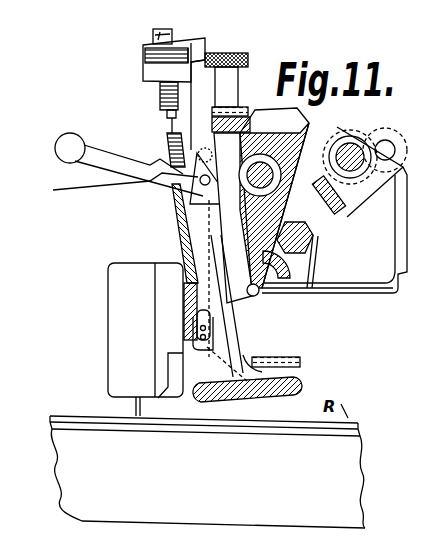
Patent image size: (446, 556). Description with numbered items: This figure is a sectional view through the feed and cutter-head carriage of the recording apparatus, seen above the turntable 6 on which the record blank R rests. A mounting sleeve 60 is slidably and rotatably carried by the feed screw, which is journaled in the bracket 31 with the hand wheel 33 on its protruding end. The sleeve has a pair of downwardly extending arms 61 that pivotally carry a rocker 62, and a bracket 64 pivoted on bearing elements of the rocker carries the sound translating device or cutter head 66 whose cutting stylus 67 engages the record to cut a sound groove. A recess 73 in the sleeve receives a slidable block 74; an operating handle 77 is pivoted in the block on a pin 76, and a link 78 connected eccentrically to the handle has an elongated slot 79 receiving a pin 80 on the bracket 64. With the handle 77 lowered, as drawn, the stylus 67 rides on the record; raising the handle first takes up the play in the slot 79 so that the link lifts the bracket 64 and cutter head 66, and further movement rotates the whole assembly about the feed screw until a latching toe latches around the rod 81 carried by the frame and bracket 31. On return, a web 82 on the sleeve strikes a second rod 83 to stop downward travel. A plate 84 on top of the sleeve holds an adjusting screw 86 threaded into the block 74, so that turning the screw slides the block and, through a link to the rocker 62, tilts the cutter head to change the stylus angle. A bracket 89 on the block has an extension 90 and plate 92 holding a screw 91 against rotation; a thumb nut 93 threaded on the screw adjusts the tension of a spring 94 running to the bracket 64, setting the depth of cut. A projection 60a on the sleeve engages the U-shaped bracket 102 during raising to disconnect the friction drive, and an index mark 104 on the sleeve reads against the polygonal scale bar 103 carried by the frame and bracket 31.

The turntable 6 is at (249, 506).
The bracket 31 is at (410, 195).
The hand wheel 33 is at (279, 174).
The mounting sleeve 60 is at (270, 126).
The projection 60a is at (333, 145).
The arms 61 is at (255, 322).
The rocker 62 is at (238, 398).
The bracket 64 is at (262, 356).
The sound translating device 66 is at (108, 325).
The cutting stylus 67 is at (135, 410).
The recess 73 is at (250, 133).
The block 74 is at (172, 124).
The pin 76 is at (172, 185).
The operating handle 77 is at (120, 178).
The link 78 is at (225, 268).
The elongated slot 79 is at (186, 322).
The pin 80 is at (213, 335).
The rod 81 is at (387, 140).
The web 82 is at (260, 296).
The second rod 83 is at (300, 270).
The plate 84 is at (238, 110).
The adjusting screw 86 is at (248, 60).
The bracket 89 is at (205, 41).
The extension 90 is at (157, 73).
The screw 91 is at (155, 30).
The plate 92 is at (178, 32).
The thumb nut 93 is at (145, 52).
The spring 94 is at (168, 148).
The U-shaped bracket 102 is at (365, 195).
The scale bar 103 is at (314, 210).
The index mark 104 is at (318, 254).